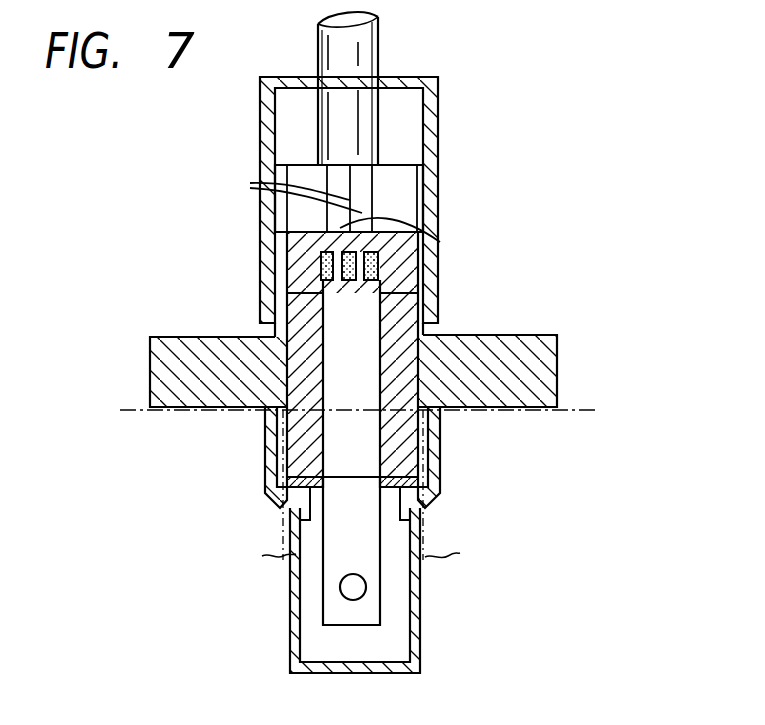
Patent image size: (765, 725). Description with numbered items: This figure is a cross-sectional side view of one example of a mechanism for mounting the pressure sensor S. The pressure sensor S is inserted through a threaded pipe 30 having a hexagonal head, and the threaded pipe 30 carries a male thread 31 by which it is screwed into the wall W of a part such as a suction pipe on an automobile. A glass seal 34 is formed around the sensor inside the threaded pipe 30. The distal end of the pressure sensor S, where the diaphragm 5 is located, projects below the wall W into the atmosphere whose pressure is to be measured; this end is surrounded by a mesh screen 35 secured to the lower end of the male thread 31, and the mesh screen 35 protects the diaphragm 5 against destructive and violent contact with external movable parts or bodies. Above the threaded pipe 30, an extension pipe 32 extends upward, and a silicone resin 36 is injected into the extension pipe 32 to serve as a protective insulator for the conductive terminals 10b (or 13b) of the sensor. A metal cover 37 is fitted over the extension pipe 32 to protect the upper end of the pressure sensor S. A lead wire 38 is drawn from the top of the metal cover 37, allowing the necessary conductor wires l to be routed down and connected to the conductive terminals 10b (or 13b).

The lead wire 38 is at (378, 50).
The metal cover 37 is at (438, 125).
The extension pipe 32 is at (425, 190).
The conductor wires l is at (272, 196).
The silicone resin 36 is at (290, 272).
The conductive terminals 10b is at (443, 244).
The conductive terminals 13b is at (435, 252).
The glass seal 34 is at (290, 440).
The threaded pipe 30 is at (497, 342).
The wall W is at (598, 411).
The male thread 31 is at (441, 456).
The mesh screen 35 is at (420, 609).
The diaphragm 5 is at (345, 591).
The pressure sensor S is at (335, 540).